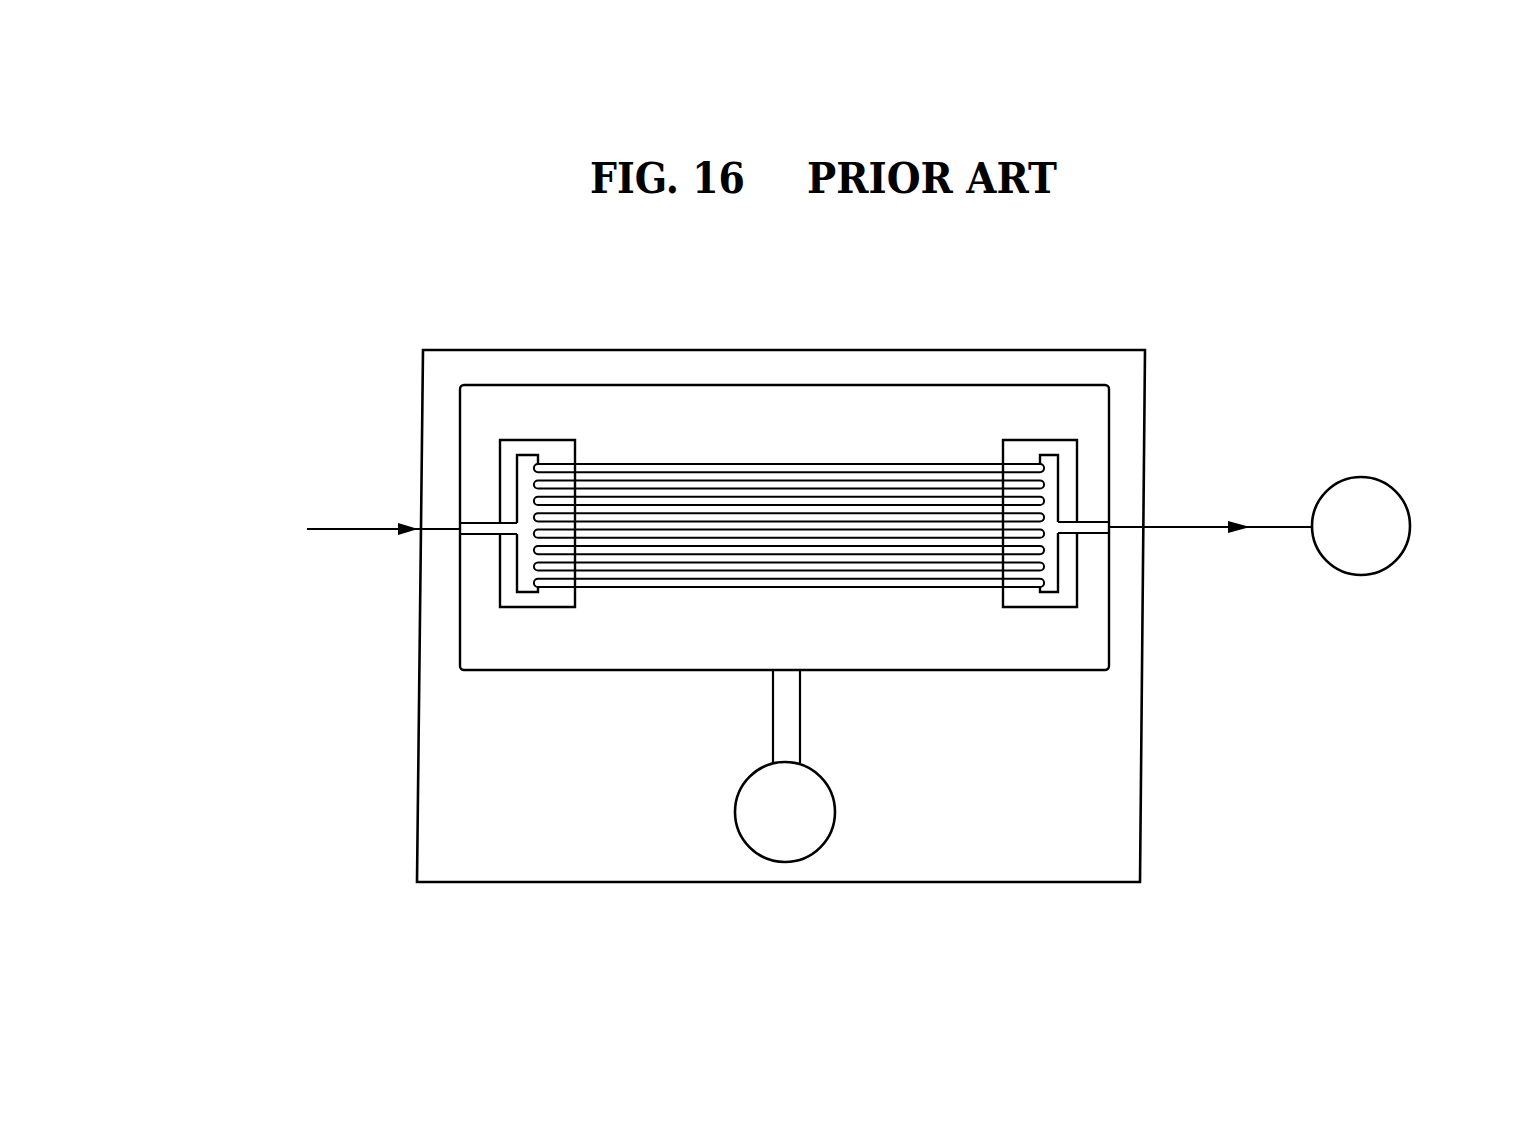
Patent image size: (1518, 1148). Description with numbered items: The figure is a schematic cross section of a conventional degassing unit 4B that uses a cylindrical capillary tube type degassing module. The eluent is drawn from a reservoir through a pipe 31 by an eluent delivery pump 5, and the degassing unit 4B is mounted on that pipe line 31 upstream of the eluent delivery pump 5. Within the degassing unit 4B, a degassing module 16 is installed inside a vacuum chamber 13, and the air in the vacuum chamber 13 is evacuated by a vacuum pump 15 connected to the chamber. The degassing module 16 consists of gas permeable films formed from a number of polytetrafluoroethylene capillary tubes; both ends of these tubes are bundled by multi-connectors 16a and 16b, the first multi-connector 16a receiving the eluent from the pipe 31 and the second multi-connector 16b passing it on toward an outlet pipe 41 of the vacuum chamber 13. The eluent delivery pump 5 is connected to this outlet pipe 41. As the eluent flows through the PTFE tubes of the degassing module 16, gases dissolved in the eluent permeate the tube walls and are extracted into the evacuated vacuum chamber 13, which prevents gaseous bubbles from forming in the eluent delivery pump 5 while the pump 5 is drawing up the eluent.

The degassing unit 4B is at (743, 350).
The vacuum chamber 13 is at (862, 672).
The degassing module 16 is at (911, 475).
The multi-connector 16a is at (519, 606).
The multi-connector 16b is at (1043, 603).
The pipe 31 is at (338, 533).
The outlet pipe 41 is at (1180, 531).
The eluent delivery pump 5 is at (1323, 566).
The vacuum pump 15 is at (853, 791).